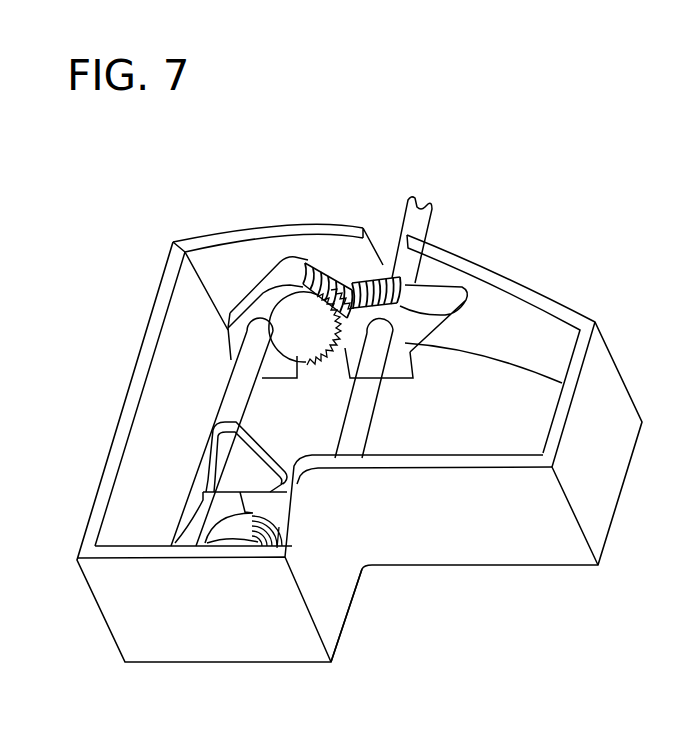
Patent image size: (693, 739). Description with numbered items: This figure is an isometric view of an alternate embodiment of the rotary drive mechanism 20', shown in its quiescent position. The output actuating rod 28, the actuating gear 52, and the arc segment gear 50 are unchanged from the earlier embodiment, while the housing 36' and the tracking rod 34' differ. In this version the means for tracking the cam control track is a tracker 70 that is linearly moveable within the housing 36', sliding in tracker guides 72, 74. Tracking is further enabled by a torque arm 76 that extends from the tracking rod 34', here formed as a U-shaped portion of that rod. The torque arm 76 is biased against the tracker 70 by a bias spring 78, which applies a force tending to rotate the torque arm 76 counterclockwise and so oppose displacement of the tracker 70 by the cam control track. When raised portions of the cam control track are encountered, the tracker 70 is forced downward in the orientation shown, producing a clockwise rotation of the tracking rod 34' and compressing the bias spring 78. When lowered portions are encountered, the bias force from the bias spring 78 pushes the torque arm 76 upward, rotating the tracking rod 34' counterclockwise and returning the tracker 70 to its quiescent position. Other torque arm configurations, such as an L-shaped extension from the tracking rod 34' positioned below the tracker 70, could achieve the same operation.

The rotary drive mechanism 20' is at (359, 355).
The output actuating rod 28 is at (403, 193).
The tracking rod 34' is at (171, 432).
The housing 36' is at (382, 445).
The arc segment gear 50 is at (313, 338).
The actuating gear 52 is at (409, 331).
The tracker 70 is at (233, 472).
The tracker guide 72 is at (215, 510).
The tracker guide 74 is at (277, 490).
The torque arm 76 is at (256, 518).
The bias spring 78 is at (272, 530).